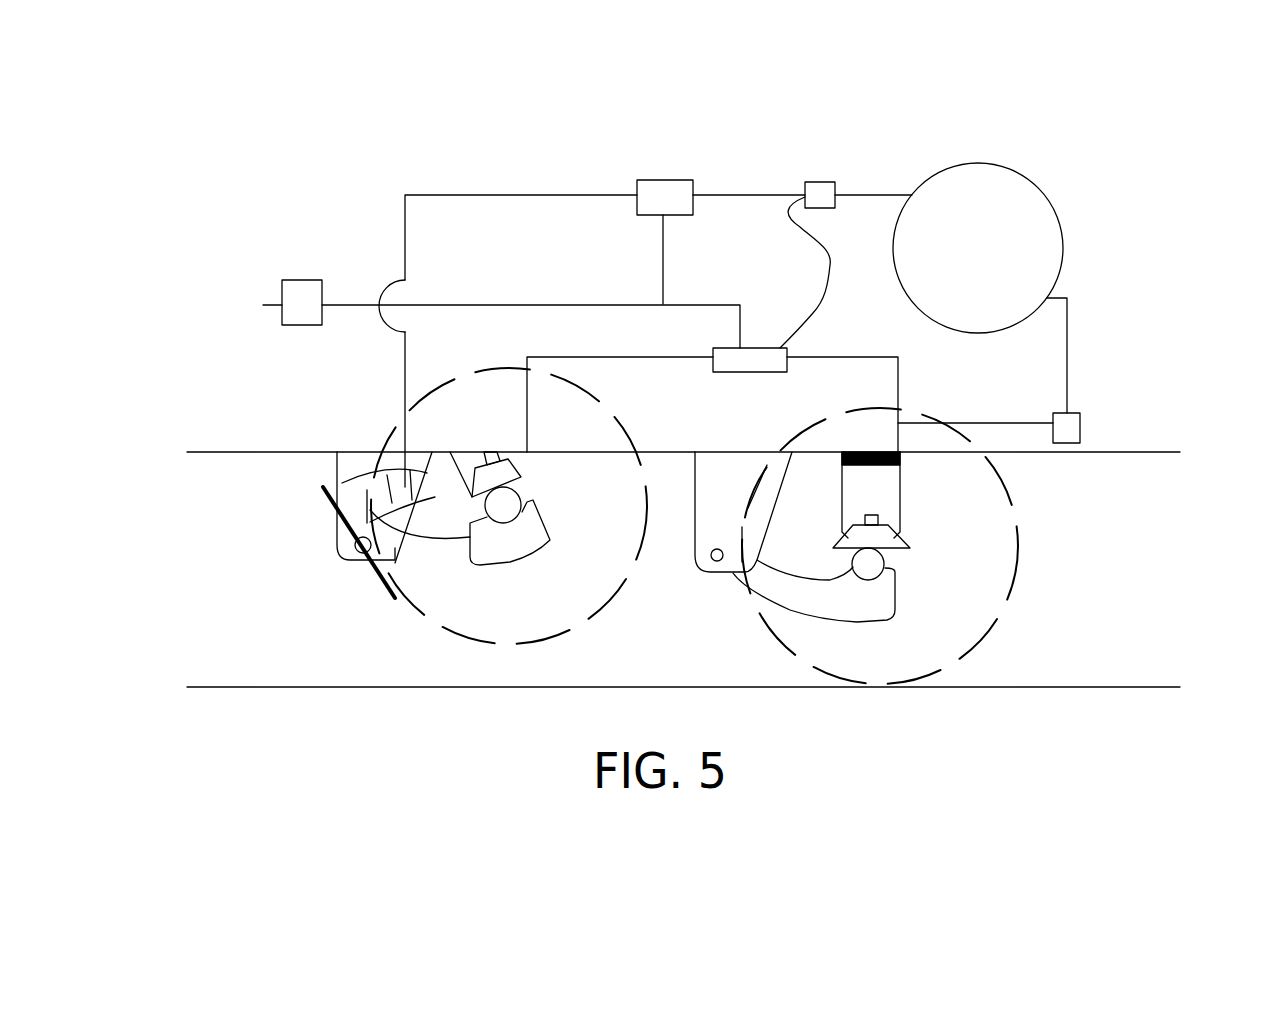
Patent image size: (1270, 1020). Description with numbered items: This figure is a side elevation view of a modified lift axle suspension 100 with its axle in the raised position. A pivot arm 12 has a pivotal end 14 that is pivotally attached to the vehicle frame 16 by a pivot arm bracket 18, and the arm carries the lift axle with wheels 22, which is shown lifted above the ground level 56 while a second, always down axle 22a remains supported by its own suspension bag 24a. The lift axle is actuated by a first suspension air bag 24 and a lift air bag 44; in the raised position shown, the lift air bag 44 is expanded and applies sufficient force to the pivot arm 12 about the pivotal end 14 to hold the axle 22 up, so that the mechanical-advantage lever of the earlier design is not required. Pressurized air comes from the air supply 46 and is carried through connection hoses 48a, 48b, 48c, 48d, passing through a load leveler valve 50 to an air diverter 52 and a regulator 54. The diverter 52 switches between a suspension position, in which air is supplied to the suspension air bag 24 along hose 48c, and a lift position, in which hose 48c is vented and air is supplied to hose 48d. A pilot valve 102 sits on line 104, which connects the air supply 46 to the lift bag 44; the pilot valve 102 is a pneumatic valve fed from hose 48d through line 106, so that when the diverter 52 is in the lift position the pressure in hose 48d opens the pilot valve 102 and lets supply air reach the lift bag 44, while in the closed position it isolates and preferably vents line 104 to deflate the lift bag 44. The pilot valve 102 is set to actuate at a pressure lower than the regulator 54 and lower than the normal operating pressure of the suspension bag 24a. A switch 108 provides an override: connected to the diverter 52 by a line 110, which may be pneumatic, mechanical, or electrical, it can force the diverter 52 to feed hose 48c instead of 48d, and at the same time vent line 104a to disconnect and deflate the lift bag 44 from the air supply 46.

The modified lift axle suspension 100 is at (285, 163).
The pilot valve 102 is at (662, 193).
The line 104 is at (468, 193).
The line 104a is at (770, 193).
The line 106 is at (668, 275).
The switch 108 is at (822, 190).
The line 110 is at (828, 300).
The air supply 46 is at (1010, 205).
The connection hose 48a is at (1070, 320).
The connection hose 48b is at (985, 422).
The connection hose 48c is at (575, 355).
The connection hose 48d is at (580, 303).
The load leveler valve 50 is at (1070, 425).
The air diverter 52 is at (740, 350).
The regulator 54 is at (303, 315).
The ground level 56 is at (280, 688).
The vehicle frame 16 is at (287, 453).
The pivot arm bracket 18 is at (357, 467).
The lift air bag 44 is at (365, 495).
The pivotal end 14 is at (357, 548).
The pivot arm 12 is at (420, 553).
The axle with wheels 22 is at (501, 512).
The always down axle 22a is at (863, 568).
The first suspension air bag 24 is at (513, 457).
The suspension bag 24a is at (887, 488).